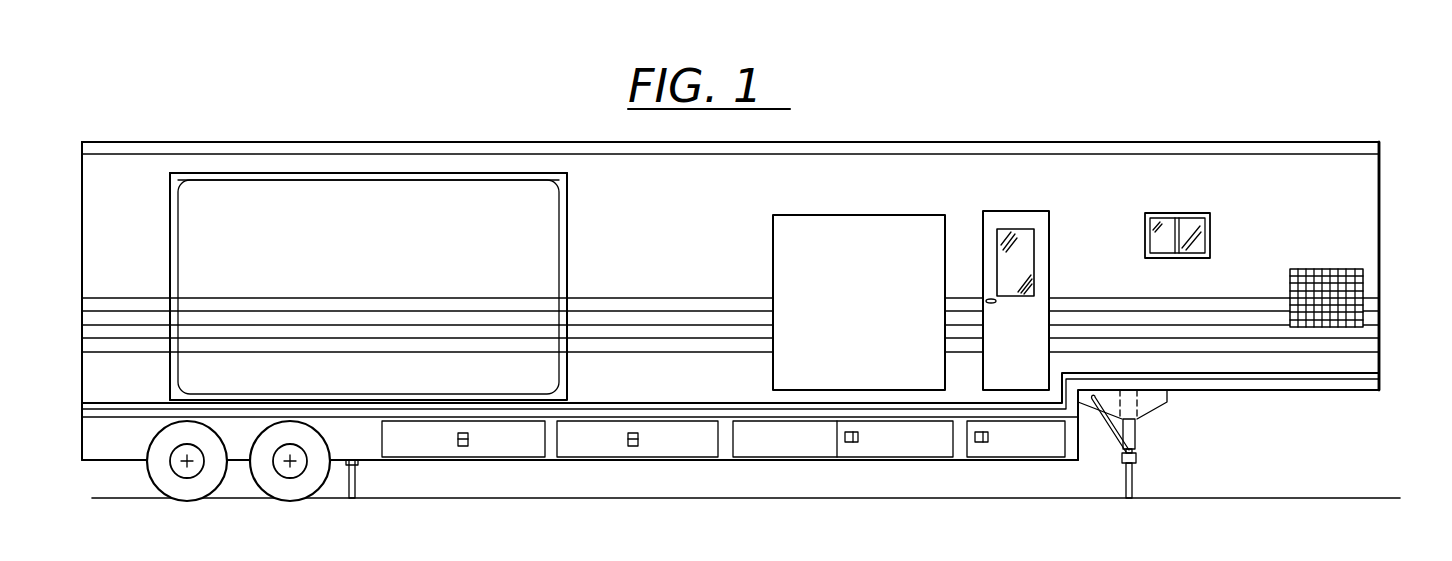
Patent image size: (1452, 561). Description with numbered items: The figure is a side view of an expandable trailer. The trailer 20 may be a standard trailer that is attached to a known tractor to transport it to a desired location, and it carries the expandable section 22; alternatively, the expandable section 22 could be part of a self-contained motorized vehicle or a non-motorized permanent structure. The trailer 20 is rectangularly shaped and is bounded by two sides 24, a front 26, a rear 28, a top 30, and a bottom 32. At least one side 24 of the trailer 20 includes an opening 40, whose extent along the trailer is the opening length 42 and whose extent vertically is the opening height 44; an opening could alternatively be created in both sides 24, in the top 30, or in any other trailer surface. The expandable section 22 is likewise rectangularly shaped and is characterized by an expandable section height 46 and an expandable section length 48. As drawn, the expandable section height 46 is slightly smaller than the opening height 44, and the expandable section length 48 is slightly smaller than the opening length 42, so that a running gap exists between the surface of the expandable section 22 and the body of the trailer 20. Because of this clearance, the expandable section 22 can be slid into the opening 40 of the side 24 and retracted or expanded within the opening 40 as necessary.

The trailer 20 is at (1197, 129).
The expandable section 22 is at (369, 281).
The side 24 is at (711, 277).
The front 26 is at (1380, 256).
The rear 28 is at (82, 158).
The top 30 is at (503, 142).
The bottom 32 is at (735, 460).
The opening 40 is at (567, 273).
The opening length 42 is at (399, 176).
The opening height 44 is at (178, 290).
The expandable section height 46 is at (171, 253).
The expandable section length 48 is at (312, 181).